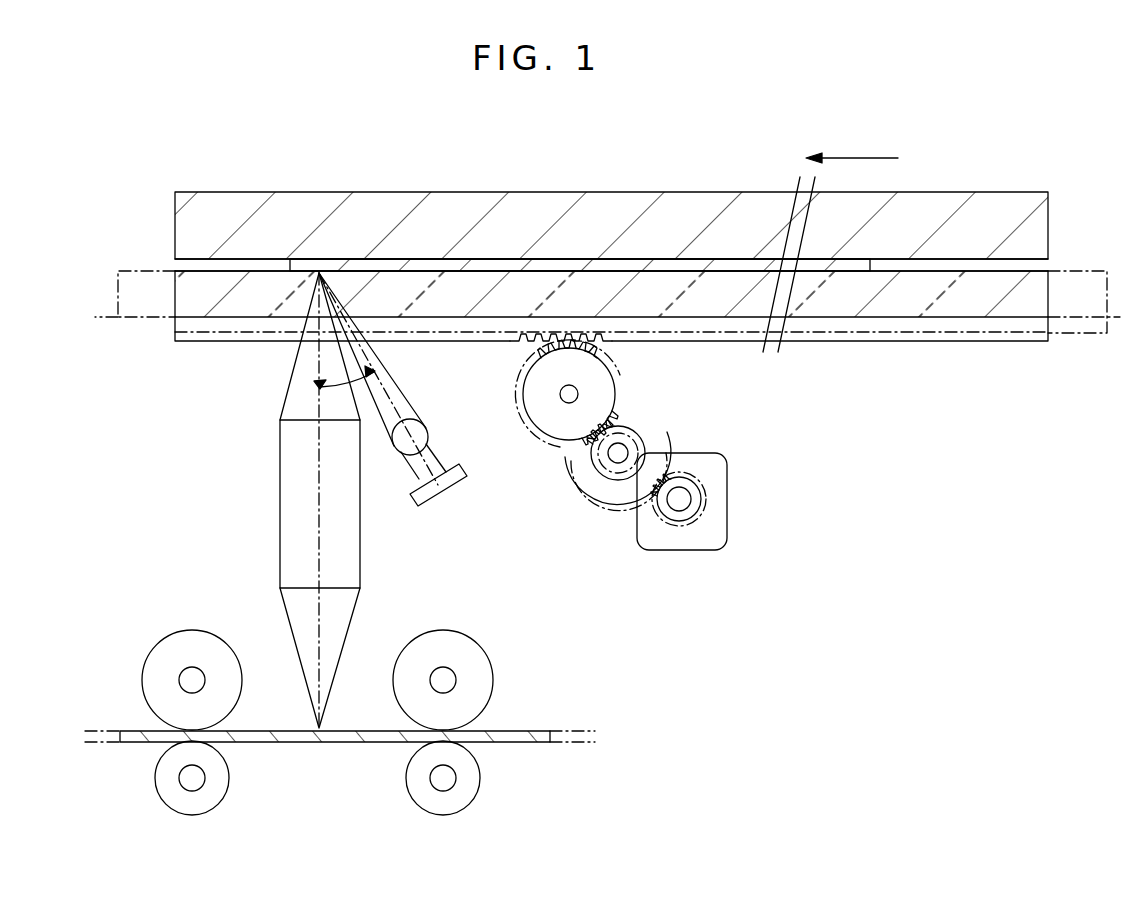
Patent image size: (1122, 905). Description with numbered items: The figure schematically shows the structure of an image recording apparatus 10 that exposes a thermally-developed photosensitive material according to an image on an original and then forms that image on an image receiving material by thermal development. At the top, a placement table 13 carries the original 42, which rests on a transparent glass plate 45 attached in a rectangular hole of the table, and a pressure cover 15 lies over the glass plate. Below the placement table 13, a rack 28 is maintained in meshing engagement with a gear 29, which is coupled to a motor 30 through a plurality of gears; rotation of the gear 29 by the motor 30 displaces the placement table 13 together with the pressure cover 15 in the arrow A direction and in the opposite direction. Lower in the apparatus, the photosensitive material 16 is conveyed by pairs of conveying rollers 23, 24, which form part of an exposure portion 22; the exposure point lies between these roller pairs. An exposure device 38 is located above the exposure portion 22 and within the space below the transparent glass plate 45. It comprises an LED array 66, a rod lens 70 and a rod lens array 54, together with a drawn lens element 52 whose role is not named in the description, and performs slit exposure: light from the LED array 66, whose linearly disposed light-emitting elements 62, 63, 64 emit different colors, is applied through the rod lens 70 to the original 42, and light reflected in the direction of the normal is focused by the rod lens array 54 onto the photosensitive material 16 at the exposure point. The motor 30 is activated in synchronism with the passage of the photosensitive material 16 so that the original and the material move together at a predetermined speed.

The image recording apparatus 10 is at (141, 171).
The placement table 13 is at (158, 271).
The pressure cover 15 is at (617, 196).
The original 42 is at (485, 259).
The transparent glass plate 45 is at (187, 297).
The rack 28 is at (603, 338).
The gear 29 is at (612, 391).
The motor 30 is at (727, 530).
The rod lens array 54 is at (361, 550).
The exposure device 38 is at (586, 611).
The lens 52 is at (432, 420).
The rod lens 70 is at (442, 440).
The LED array 66 is at (452, 490).
The light-emitting element 62 is at (444, 512).
The light-emitting element 63 is at (444, 512).
The light-emitting element 64 is at (420, 475).
The exposure portion 22 is at (348, 806).
The photosensitive material 16 is at (513, 730).
The pair of conveying rollers 24 is at (218, 710).
The pair of conveying rollers 23 is at (472, 707).